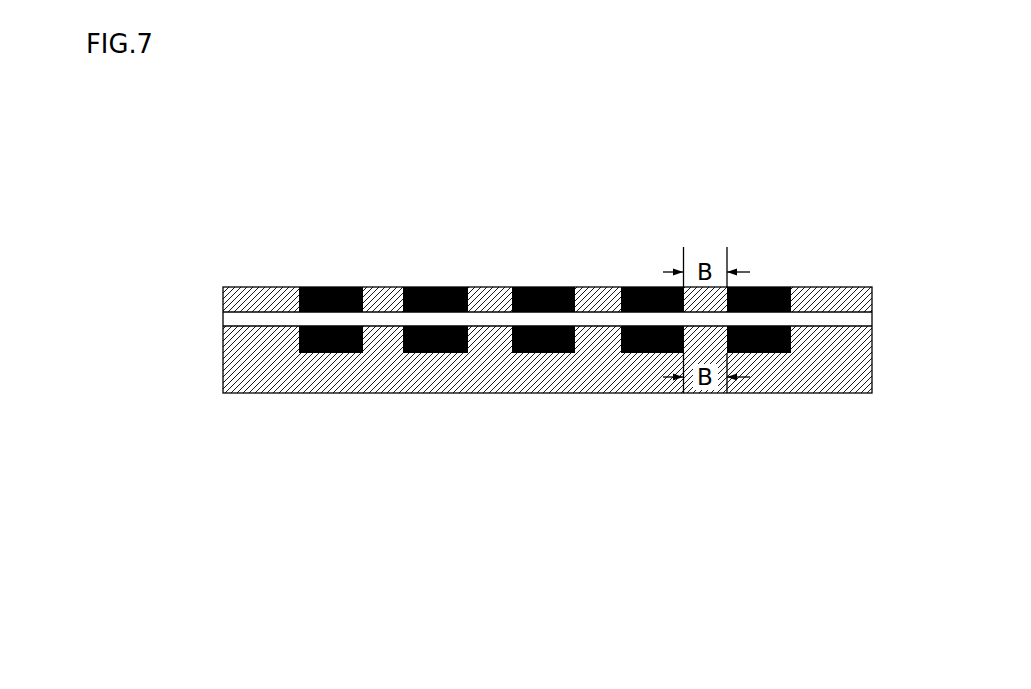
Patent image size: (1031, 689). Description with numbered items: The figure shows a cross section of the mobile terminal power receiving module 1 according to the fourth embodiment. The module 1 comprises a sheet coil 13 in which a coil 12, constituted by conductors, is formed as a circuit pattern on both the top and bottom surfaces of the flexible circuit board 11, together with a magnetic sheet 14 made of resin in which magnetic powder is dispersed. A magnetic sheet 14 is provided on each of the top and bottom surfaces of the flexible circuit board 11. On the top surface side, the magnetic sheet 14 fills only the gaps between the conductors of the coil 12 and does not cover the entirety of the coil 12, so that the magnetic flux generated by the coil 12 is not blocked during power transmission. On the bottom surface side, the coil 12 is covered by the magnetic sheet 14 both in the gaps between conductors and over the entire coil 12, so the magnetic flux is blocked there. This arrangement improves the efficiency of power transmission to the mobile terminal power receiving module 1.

The mobile terminal power receiving module 1 is at (612, 308).
The flexible circuit board 11 is at (835, 324).
The coil 12 is at (793, 308).
The sheet coil 13 is at (593, 306).
The magnetic sheet 14 is at (814, 290).